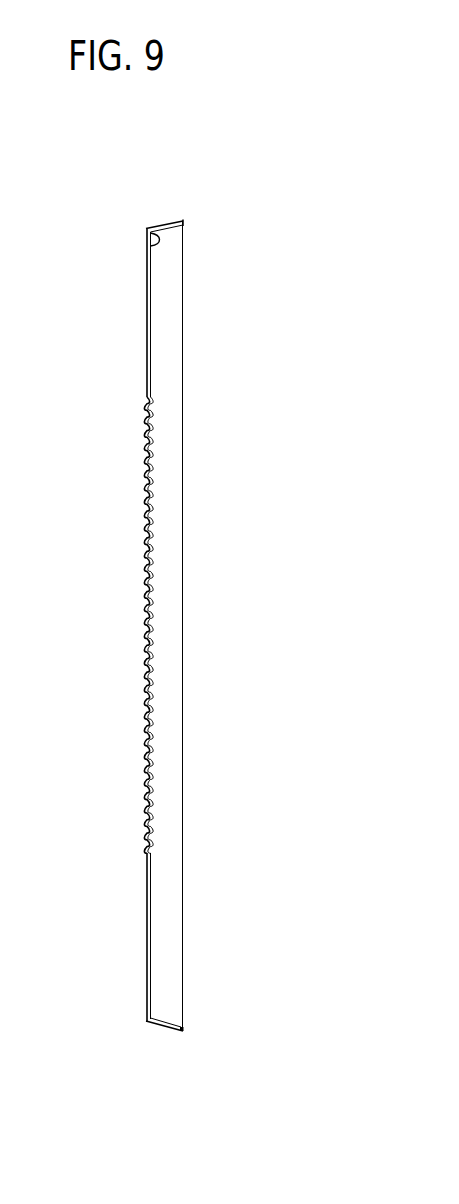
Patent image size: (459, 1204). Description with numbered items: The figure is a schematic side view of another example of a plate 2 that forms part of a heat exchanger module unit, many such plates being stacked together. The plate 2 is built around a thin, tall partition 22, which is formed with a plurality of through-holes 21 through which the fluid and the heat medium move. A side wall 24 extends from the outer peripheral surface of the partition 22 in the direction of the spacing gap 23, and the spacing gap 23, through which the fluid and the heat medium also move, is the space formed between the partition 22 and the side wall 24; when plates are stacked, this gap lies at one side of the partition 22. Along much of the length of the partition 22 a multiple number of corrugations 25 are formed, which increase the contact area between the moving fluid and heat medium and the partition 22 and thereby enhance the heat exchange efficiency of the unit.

The plate 2 is at (93, 203).
The through-hole 21 is at (147, 288).
The partition 22 is at (147, 367).
The spacing gap 23 is at (148, 234).
The side wall 24 is at (171, 222).
The corrugation 25 is at (150, 611).